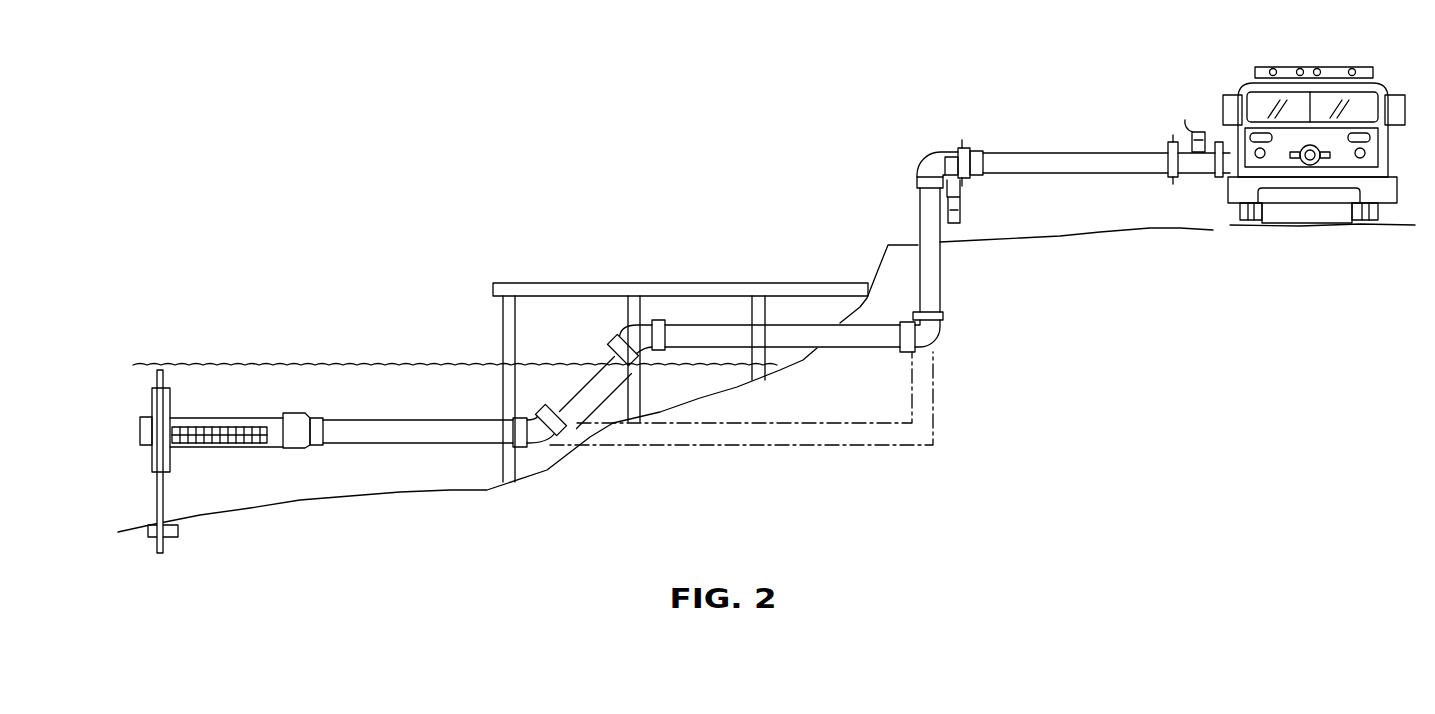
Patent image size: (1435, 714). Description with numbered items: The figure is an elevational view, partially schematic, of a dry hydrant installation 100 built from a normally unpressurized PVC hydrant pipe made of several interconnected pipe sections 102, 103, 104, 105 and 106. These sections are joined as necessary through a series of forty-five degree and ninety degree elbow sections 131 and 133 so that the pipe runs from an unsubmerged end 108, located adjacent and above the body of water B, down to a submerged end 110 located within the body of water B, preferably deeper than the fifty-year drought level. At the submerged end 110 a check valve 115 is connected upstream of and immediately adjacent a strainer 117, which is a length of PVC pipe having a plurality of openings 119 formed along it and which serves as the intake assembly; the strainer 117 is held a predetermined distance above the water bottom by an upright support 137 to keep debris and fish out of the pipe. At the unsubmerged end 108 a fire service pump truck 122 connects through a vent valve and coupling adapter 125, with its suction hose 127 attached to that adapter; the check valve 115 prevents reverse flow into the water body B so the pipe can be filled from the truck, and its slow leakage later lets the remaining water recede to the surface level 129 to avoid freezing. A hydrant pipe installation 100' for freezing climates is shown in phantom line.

The dry hydrant installation 100 is at (685, 302).
The hydrant pipe installation 100' is at (741, 431).
The pipe section 102 is at (478, 443).
The pipe section 103 is at (587, 392).
The pipe section 104 is at (837, 337).
The pipe section 105 is at (935, 282).
The pipe section 106 is at (1035, 155).
The unsubmerged end 108 is at (1195, 98).
The submerged end 110 is at (313, 475).
The check valve 115 is at (302, 400).
The strainer 117 is at (201, 400).
The openings 119 is at (215, 438).
The pump truck 122 is at (1333, 240).
The vent valve and coupling adapter 125 is at (1188, 182).
The suction hose 127 is at (1223, 165).
The surface level 129 is at (421, 360).
The elbow section 131 is at (540, 433).
The elbow section 133 is at (935, 337).
The upright support 137 is at (157, 490).
The body of water B is at (243, 493).